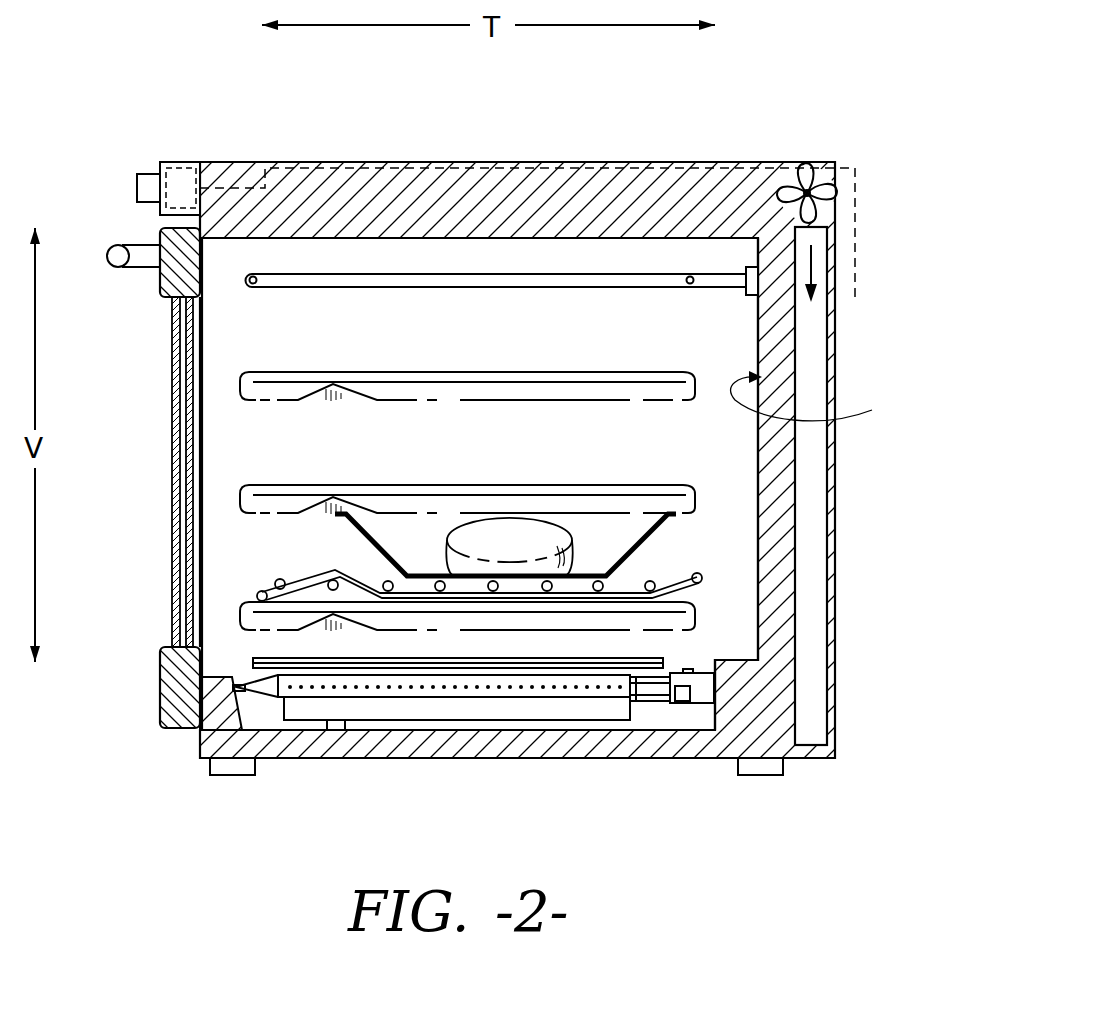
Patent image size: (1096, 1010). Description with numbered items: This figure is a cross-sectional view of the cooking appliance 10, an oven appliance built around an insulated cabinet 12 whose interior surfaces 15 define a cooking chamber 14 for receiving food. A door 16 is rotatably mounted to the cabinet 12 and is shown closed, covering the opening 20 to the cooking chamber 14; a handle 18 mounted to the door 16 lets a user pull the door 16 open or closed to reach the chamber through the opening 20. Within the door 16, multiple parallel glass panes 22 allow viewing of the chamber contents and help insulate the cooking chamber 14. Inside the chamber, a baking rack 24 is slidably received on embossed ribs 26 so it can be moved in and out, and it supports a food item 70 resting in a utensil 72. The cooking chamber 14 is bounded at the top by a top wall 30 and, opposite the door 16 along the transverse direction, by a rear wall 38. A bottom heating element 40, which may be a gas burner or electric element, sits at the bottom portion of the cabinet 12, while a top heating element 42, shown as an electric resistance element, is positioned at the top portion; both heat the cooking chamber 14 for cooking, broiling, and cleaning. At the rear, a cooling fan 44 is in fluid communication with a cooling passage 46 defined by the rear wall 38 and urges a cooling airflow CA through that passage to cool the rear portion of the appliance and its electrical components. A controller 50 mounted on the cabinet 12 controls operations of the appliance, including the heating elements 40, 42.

The cooking appliance 10 is at (815, 108).
The cabinet 12 is at (266, 178).
The cooking chamber 14 is at (710, 450).
The interior surfaces 15 is at (448, 246).
The door 16 is at (172, 275).
The handle 18 is at (118, 256).
The opening 20 is at (222, 378).
The glass panes 22 is at (172, 468).
The baking rack 24 is at (305, 584).
The embossed ribs 26 is at (695, 492).
The top wall 30 is at (499, 280).
The rear wall 38 is at (823, 398).
The bottom heating element 40 is at (651, 708).
The top heating element 42 is at (562, 263).
The cooling fan 44 is at (830, 186).
The cooling passage 46 is at (818, 344).
The controller 50 is at (178, 163).
The food item 70 is at (477, 520).
The utensil 72 is at (340, 520).
The cooling airflow CA is at (845, 258).